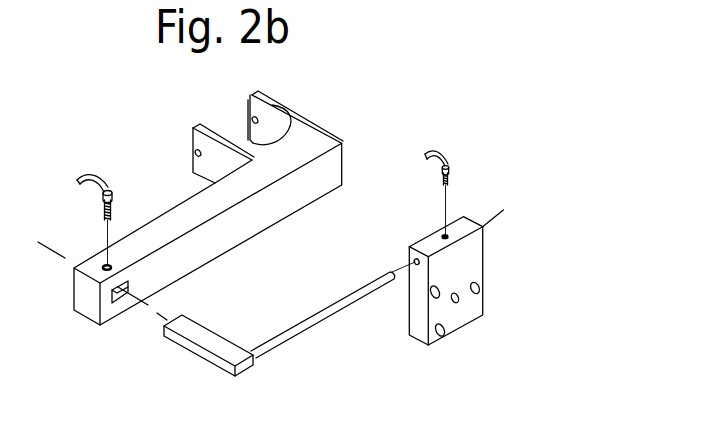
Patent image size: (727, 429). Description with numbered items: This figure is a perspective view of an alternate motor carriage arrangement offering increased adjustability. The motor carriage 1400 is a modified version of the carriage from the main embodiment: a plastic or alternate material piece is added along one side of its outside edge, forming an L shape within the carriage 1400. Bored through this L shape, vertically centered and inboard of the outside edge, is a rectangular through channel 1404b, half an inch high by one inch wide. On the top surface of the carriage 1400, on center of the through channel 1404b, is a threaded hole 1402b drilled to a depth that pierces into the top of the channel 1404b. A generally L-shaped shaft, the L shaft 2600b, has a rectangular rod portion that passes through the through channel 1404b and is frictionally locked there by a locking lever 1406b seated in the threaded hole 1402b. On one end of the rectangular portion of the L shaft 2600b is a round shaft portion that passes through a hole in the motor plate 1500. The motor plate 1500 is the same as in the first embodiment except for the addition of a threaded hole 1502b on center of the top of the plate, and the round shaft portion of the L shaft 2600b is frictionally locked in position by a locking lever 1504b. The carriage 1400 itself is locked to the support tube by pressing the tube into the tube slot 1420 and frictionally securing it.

The motor carriage 1400 is at (294, 111).
The tube slot 1420 is at (250, 127).
The locking lever 1406b is at (115, 191).
The threaded hole 1402b is at (102, 266).
The through channel 1404b is at (132, 282).
The L shaft 2600b is at (197, 323).
The motor plate 1500 is at (445, 281).
The threaded hole 1502b is at (443, 236).
The locking lever 1504b is at (448, 160).